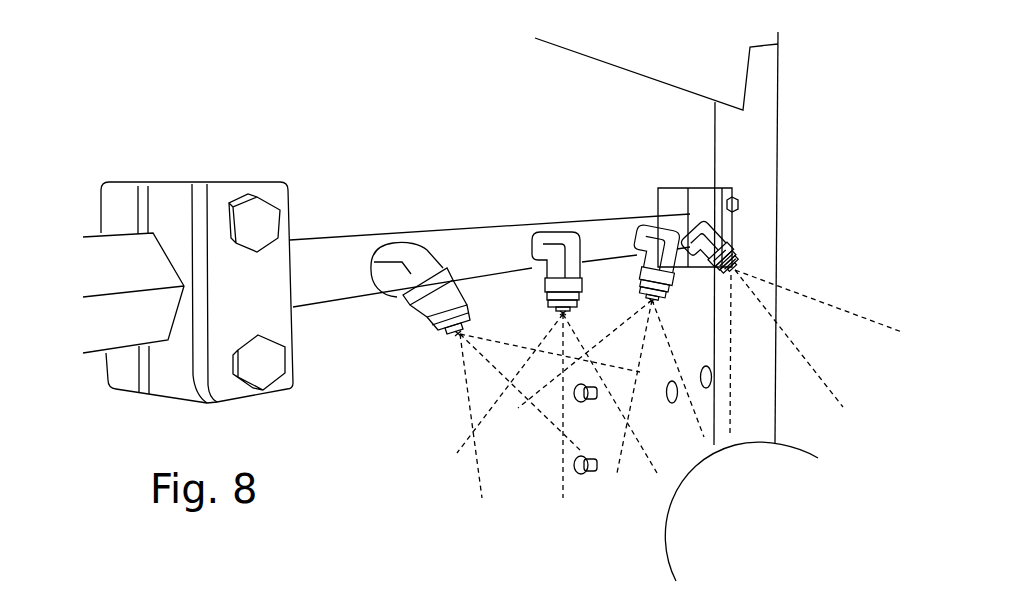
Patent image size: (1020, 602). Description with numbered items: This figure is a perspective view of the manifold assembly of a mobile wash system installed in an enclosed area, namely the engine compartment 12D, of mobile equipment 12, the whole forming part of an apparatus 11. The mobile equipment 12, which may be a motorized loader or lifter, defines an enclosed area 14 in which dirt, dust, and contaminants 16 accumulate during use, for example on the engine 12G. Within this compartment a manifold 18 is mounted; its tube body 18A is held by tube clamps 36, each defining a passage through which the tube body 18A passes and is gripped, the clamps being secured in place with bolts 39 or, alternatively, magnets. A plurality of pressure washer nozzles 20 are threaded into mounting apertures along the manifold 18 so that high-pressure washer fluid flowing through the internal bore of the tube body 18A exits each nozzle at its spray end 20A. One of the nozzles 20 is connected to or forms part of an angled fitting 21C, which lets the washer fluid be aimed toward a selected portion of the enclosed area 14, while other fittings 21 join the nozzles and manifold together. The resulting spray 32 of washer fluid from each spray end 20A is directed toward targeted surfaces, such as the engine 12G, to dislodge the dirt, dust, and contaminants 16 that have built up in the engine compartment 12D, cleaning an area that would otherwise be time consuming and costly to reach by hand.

The apparatus 11 is at (103, 100).
The mobile equipment 12 is at (525, 117).
The engine compartment 12D is at (607, 109).
The engine 12G is at (743, 517).
The enclosed area 14 is at (617, 151).
The dirt, dust, and contaminants 16 is at (772, 487).
The manifold 18 is at (320, 268).
The tube body 18A is at (358, 262).
The pressure washer nozzles 20 is at (460, 300).
The spray end 20A is at (452, 352).
The fittings 21 is at (112, 260).
The angled fitting 21C is at (427, 253).
The washer fluid spray 32 is at (604, 337).
The tube clamps 36 is at (173, 203).
The bolts 39 is at (257, 213).